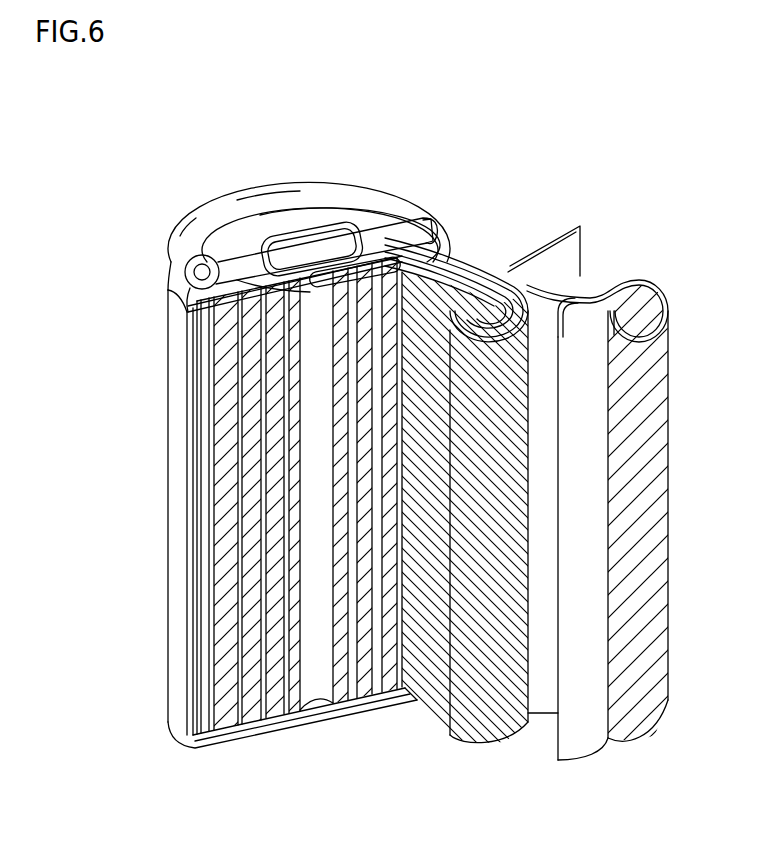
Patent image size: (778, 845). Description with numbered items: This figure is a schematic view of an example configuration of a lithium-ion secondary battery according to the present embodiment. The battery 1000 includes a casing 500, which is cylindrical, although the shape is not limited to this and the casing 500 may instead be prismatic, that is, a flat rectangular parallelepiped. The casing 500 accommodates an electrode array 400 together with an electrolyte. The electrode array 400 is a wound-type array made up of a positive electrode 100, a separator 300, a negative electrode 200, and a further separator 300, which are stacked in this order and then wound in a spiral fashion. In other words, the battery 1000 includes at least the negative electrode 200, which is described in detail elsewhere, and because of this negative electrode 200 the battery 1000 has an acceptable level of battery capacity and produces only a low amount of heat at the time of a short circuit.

The battery 1000 is at (126, 109).
The casing 500 is at (176, 432).
The electrode array 400 is at (668, 192).
The positive electrode 100 is at (463, 302).
The separator 300 is at (579, 222).
The negative electrode 200 is at (646, 290).